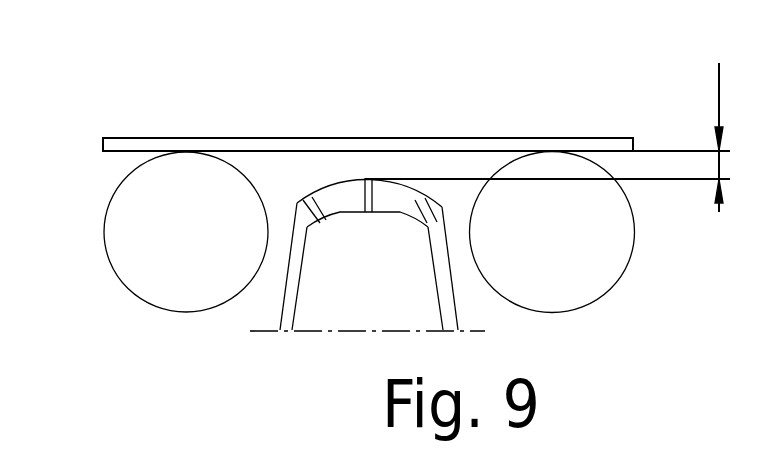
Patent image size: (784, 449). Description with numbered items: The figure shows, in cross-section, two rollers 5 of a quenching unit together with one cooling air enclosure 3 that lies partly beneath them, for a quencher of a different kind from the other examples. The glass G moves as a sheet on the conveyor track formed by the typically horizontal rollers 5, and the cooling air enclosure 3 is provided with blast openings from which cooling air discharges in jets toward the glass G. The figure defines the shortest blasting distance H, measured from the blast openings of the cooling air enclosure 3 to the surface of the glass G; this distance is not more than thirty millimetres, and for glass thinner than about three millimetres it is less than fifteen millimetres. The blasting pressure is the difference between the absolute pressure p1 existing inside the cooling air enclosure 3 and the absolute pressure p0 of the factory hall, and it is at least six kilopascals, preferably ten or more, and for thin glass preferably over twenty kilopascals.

The glass G is at (273, 138).
The rollers 5 is at (408, 286).
The cooling air enclosure 3 is at (344, 313).
The shortest blasting distance H is at (703, 137).
The absolute pressure of the factory hall p0 is at (185, 335).
The absolute pressure inside the cooling air enclosure p1 is at (357, 282).